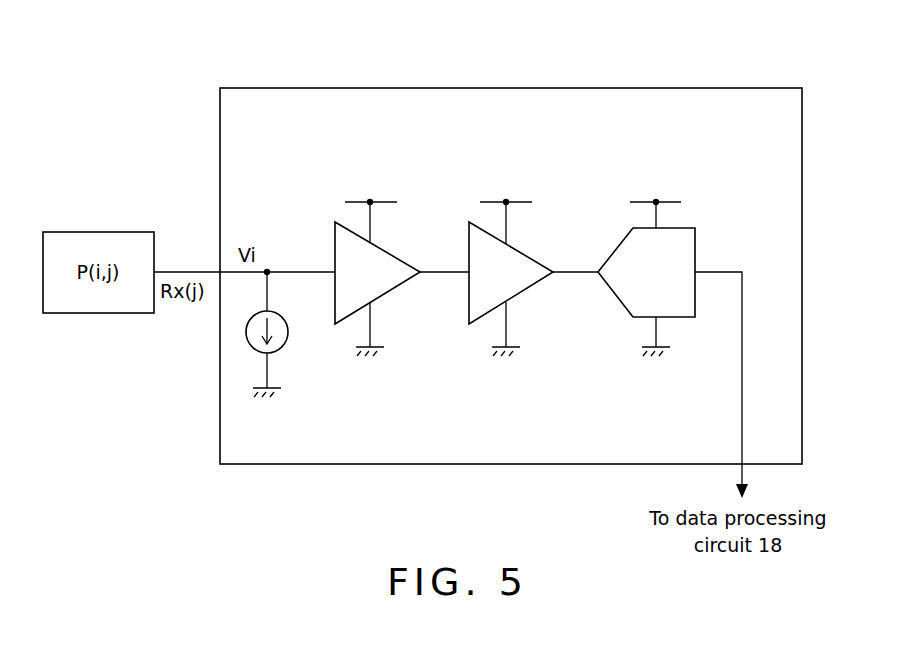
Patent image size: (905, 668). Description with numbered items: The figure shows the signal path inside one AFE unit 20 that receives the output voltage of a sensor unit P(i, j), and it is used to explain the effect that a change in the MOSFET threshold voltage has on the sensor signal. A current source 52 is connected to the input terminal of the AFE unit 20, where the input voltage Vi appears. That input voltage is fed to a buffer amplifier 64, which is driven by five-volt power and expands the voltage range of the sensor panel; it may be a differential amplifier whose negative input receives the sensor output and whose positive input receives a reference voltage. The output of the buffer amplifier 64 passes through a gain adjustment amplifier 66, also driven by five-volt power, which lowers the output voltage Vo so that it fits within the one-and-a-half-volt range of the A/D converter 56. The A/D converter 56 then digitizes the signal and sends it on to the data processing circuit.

The AFE unit 20 is at (543, 87).
The current source 52 is at (283, 337).
The buffer amplifier 64 is at (393, 253).
The gain adjustment amplifier 66 is at (528, 252).
The A/D converter 56 is at (697, 253).